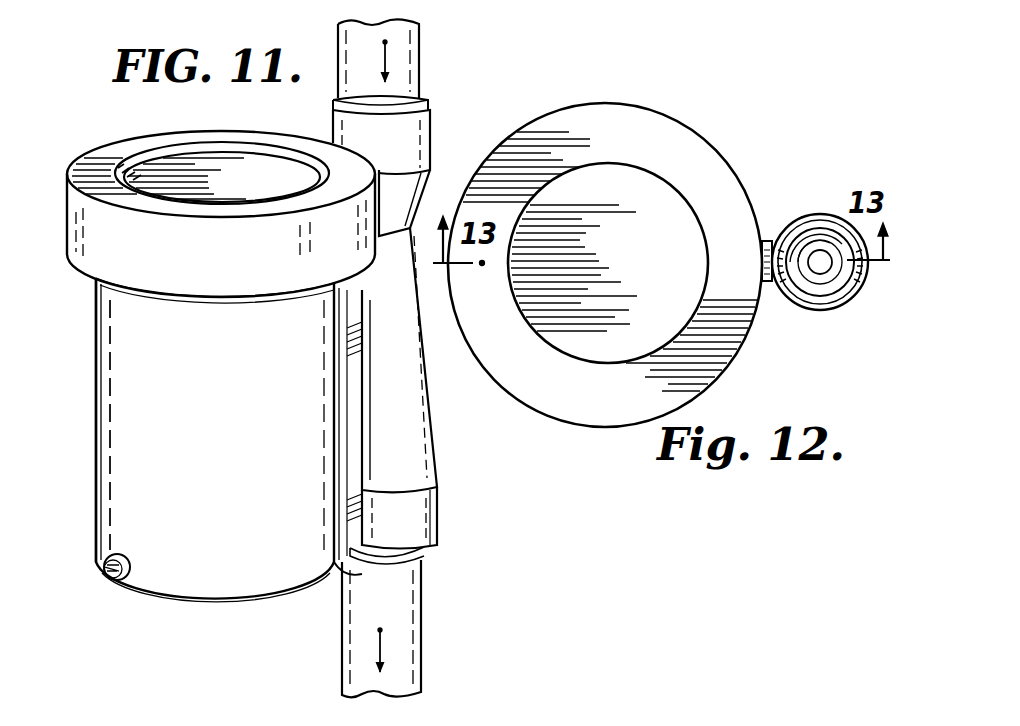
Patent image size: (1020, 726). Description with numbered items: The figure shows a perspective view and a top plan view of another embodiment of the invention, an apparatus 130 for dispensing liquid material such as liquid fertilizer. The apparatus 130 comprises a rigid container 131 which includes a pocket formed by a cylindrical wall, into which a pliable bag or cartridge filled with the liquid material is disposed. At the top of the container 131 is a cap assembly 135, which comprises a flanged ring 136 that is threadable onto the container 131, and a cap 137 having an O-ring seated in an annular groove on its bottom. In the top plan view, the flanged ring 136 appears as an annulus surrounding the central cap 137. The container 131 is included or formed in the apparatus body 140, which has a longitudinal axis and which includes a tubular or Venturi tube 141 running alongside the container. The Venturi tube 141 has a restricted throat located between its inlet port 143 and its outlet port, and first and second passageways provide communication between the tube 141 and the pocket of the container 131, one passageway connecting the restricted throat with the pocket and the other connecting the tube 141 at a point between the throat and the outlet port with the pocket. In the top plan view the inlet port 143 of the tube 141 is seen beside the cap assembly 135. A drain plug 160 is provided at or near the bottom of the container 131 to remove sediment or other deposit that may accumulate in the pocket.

In FIG. 11, the apparatus 130 is at (166, 612).
In FIG. 12, the apparatus 130 is at (770, 162).
In FIG. 11, the rigid container 131 is at (115, 426).
In FIG. 11, the cap assembly 135 is at (61, 164).
In FIG. 12, the cap assembly 135 is at (666, 110).
In FIG. 11, the flanged ring 136 is at (190, 128).
In FIG. 12, the flanged ring 136 is at (597, 381).
In FIG. 11, the cap 137 is at (245, 167).
In FIG. 12, the cap 137 is at (637, 262).
In FIG. 11, the apparatus body 140 is at (264, 490).
In FIG. 11, the Venturi tube 141 is at (446, 441).
In FIG. 12, the Venturi tube 141 is at (840, 320).
In FIG. 12, the inlet port 143 is at (812, 233).
In FIG. 11, the drain plug 160 is at (101, 573).